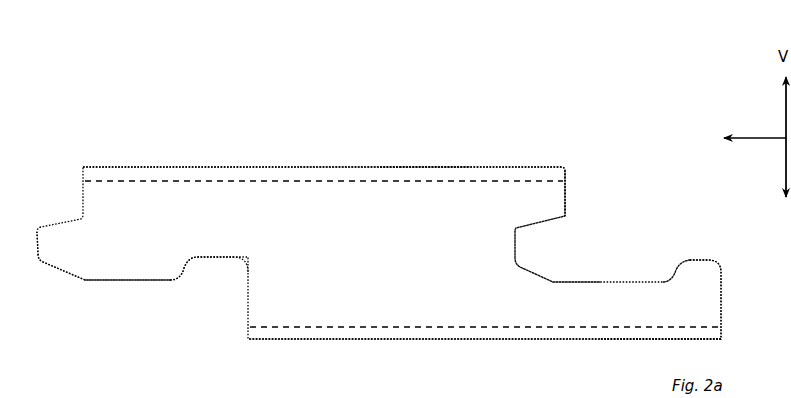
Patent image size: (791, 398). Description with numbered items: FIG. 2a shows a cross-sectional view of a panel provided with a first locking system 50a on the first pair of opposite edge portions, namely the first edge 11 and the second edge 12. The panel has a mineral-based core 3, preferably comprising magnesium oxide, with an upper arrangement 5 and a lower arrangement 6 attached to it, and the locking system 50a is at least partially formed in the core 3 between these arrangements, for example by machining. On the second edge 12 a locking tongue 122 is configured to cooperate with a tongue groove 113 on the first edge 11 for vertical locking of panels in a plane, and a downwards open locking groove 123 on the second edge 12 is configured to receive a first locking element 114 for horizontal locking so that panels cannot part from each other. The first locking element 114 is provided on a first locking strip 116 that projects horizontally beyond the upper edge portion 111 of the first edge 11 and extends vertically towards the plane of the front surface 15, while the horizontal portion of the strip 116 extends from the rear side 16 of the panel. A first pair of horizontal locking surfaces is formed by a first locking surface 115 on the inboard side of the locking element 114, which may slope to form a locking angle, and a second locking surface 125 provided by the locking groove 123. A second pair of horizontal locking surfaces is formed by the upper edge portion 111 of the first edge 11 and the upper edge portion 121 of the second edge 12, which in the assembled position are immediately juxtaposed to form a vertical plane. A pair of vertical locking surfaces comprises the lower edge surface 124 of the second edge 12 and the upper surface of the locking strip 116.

The first locking system 50a is at (72, 81).
The mineral-based core 3 is at (427, 298).
The upper arrangement 5 is at (330, 173).
The lower arrangement 6 is at (352, 335).
The first edge 11 is at (547, 153).
The second edge 12 is at (162, 147).
The front surface 15 is at (412, 168).
The rear side 16 is at (698, 340).
The upper edge portion 111 is at (567, 191).
The tongue groove 113 is at (540, 251).
The first locking element 114 is at (695, 270).
The first locking surface 115 is at (666, 273).
The first locking strip 116 is at (608, 300).
The upper edge portion 121 is at (82, 190).
The locking tongue 122 is at (60, 261).
The locking groove 123 is at (466, 326).
The lower edge surface 124 is at (125, 281).
The second locking surface 125 is at (219, 283).